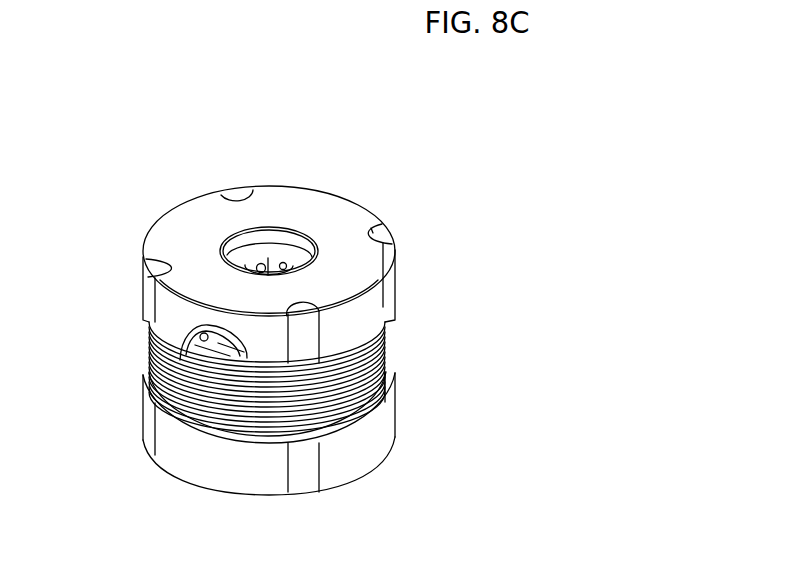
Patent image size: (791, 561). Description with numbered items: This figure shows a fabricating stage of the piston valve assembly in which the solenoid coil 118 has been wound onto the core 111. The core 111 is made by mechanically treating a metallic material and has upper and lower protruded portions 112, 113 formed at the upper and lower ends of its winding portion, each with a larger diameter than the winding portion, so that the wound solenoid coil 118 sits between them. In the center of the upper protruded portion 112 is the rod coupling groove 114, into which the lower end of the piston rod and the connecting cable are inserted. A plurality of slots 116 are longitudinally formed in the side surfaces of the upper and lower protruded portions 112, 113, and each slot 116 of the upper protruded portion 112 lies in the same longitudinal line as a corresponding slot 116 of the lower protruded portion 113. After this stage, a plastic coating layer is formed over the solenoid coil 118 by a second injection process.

The core 111 is at (414, 317).
The upper protruded portion 112 is at (158, 308).
The lower protruded portion 113 is at (178, 463).
The rod coupling groove 114 is at (293, 248).
The slot 116 is at (376, 221).
The solenoid coil 118 is at (387, 368).